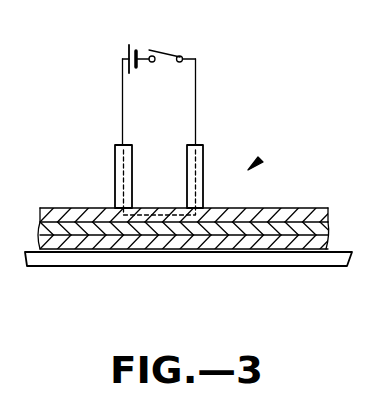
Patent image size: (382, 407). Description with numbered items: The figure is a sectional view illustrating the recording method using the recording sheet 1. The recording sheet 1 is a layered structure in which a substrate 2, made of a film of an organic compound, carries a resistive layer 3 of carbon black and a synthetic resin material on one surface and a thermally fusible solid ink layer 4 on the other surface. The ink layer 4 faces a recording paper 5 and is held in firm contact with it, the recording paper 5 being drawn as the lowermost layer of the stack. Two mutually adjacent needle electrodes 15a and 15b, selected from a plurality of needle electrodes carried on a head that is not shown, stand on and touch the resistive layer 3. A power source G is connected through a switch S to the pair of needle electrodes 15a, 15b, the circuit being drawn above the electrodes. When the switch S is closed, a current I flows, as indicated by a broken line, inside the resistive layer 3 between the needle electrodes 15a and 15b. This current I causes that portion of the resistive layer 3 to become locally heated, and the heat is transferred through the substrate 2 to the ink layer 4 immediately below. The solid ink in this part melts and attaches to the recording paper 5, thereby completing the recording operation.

The recording sheet 1 is at (275, 146).
The substrate 2 is at (228, 229).
The resistive layer 3 is at (287, 217).
The thermally fusible solid ink layer 4 is at (252, 242).
The recording paper 5 is at (279, 256).
The needle electrode 15a is at (116, 160).
The needle electrode 15b is at (203, 160).
The power source G is at (127, 47).
The switch S is at (163, 49).
The current I is at (152, 213).